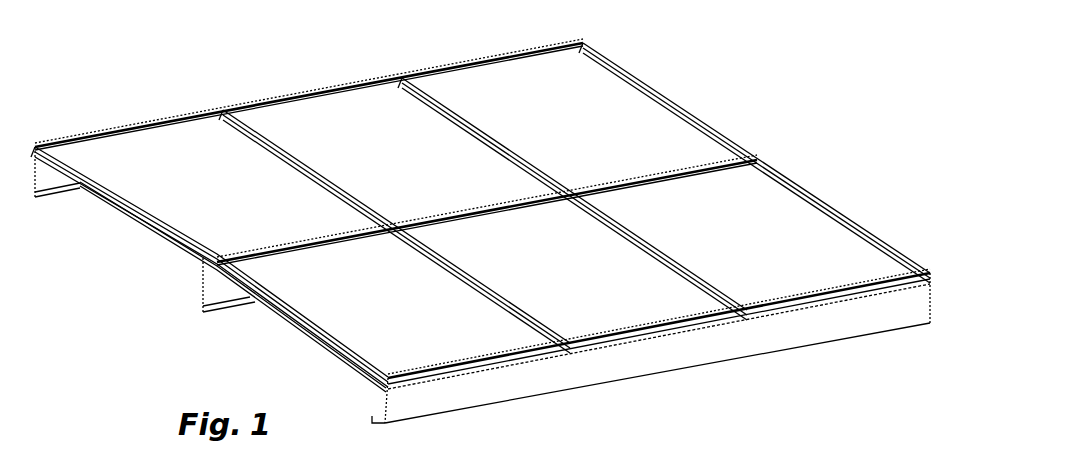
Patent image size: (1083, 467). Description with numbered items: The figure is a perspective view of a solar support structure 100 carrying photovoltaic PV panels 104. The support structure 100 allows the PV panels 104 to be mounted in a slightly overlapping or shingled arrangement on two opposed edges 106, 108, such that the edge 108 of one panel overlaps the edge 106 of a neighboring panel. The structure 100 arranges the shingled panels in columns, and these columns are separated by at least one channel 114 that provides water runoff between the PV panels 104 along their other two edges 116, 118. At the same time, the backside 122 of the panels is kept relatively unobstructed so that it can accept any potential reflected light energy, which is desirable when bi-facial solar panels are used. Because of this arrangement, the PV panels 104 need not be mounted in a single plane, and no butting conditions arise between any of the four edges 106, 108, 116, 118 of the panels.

The solar support structure 100 is at (781, 91).
The PV panels 104 is at (581, 102).
The edge 106 is at (131, 141).
The edge 108 is at (282, 236).
The channel 114 is at (33, 145).
The edge 116 is at (522, 163).
The edge 118 is at (310, 160).
The backside 122 is at (158, 264).